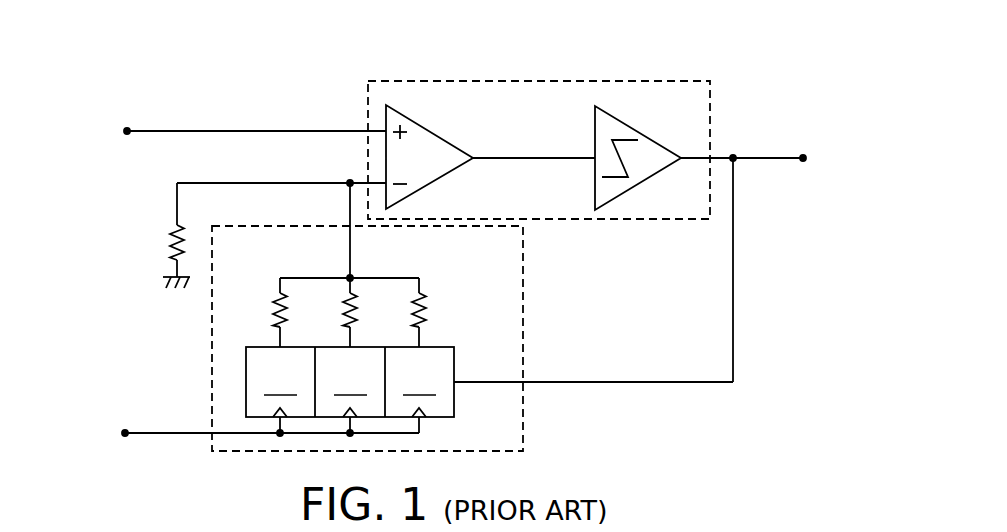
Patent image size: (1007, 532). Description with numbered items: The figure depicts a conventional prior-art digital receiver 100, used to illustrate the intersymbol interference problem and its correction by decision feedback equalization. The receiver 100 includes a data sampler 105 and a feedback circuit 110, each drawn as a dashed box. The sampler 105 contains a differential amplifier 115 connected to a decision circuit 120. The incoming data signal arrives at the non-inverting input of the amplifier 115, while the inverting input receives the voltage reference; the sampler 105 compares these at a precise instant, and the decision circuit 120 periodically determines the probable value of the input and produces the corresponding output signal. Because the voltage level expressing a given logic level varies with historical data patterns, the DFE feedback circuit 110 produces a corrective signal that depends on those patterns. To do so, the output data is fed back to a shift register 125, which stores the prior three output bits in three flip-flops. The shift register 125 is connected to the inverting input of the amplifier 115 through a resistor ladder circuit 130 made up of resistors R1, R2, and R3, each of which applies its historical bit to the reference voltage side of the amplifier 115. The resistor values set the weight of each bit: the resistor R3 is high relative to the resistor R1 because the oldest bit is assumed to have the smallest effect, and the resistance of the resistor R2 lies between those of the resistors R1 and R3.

The receiver 100 is at (720, 66).
The data sampler 105 is at (557, 113).
The feedback circuit 110 is at (516, 443).
The differential amplifier 115 is at (435, 168).
The decision circuit 120 is at (637, 131).
The shift register 125 is at (454, 361).
The resistor ladder circuit 130 is at (325, 266).
The resistor R1 is at (427, 312).
The resistor R2 is at (357, 314).
The resistor R3 is at (275, 311).